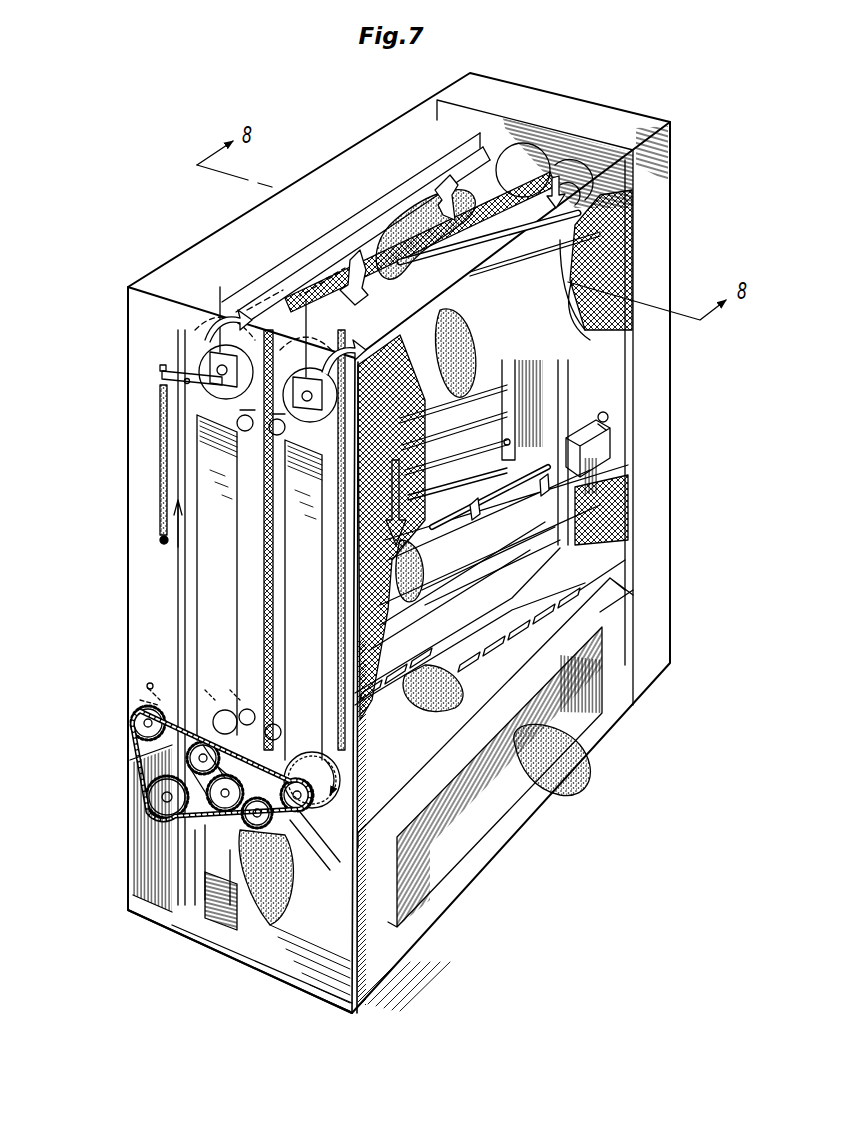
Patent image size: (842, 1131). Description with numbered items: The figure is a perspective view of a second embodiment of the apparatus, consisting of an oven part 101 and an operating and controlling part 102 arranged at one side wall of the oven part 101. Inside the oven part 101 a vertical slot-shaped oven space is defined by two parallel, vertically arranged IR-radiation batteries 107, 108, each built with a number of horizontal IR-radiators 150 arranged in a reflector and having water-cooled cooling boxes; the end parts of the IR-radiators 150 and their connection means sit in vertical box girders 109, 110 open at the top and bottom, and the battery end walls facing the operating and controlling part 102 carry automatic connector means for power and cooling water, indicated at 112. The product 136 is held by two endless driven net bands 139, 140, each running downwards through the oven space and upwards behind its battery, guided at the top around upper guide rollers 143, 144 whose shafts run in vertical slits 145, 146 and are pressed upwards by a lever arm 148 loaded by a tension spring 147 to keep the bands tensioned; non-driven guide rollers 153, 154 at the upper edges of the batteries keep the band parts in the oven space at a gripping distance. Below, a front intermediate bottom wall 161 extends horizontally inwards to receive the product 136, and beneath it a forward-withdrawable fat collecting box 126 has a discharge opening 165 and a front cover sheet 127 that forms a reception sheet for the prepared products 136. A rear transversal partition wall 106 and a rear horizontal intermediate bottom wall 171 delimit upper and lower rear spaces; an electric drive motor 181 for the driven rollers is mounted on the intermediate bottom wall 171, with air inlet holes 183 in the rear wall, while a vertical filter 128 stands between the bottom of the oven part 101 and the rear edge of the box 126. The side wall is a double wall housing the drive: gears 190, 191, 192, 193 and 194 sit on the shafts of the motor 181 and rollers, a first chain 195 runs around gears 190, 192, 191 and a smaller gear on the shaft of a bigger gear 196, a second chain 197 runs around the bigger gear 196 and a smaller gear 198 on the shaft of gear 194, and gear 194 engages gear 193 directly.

The oven part 101 is at (122, 483).
The operating and controlling part 102 is at (680, 240).
The rear transversal partition wall 106 is at (421, 178).
The IR-radiation battery 107 is at (213, 537).
The IR-radiation battery 108 is at (301, 537).
The vertical box girder 109 is at (215, 594).
The vertical box girder 110 is at (321, 592).
The connector means 112 is at (593, 455).
The fat collecting box 126 is at (443, 897).
The front cover sheet 127 is at (473, 830).
The filter 128 is at (250, 900).
The product 136 is at (446, 210).
The net band 139 is at (195, 405).
The net band 140 is at (337, 643).
The upper guide roller 143 is at (207, 343).
The upper guide roller 144 is at (348, 352).
The vertical slit 145 is at (232, 330).
The vertical slit 146 is at (312, 334).
The tension spring 147 is at (158, 398).
The lever arm 148 is at (166, 369).
The IR-radiator 150 is at (447, 460).
The guide roller 153 is at (218, 460).
The guide roller 154 is at (305, 482).
The front intermediate bottom wall 161 is at (615, 590).
The discharge opening 165 is at (474, 809).
The rear horizontal intermediate bottom wall 171 is at (187, 754).
The electric drive motor 181 is at (170, 672).
The air inlet holes 183 is at (148, 686).
The gear 190 is at (131, 724).
The gear 191 is at (195, 768).
The gear 192 is at (305, 835).
The gear 193 is at (188, 855).
The gear 194 is at (282, 880).
The first chain 195 is at (152, 805).
The bigger gear 196 is at (180, 812).
The second chain 197 is at (190, 820).
The smaller gear 198 is at (245, 830).